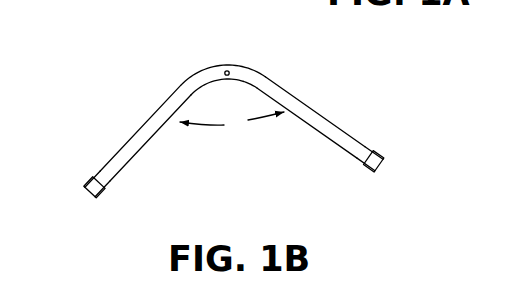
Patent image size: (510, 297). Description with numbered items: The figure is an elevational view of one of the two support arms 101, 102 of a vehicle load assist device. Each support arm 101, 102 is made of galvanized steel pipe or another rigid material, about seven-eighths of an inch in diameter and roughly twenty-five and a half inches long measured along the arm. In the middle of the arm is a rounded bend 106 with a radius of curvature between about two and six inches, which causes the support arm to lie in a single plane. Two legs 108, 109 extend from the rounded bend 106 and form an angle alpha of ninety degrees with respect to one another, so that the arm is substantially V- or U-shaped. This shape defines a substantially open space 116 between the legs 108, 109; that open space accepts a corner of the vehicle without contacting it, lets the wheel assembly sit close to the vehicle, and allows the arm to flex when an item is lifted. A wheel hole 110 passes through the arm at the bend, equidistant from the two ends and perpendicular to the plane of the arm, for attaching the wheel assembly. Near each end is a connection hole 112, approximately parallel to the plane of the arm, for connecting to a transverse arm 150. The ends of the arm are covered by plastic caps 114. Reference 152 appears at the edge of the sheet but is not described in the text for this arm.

The support arm 101 is at (235, 126).
The support arm 102 is at (199, 46).
The rounded bend 106 is at (245, 56).
The leg 108 is at (324, 87).
The leg 109 is at (119, 116).
The wheel hole 110 is at (227, 70).
The connection hole 112 is at (84, 172).
The plastic cap 114 is at (90, 197).
The substantially open space 116 is at (239, 178).
The element of FIG. 1C 152 is at (365, 286).
The transverse arm 150 is at (486, 276).